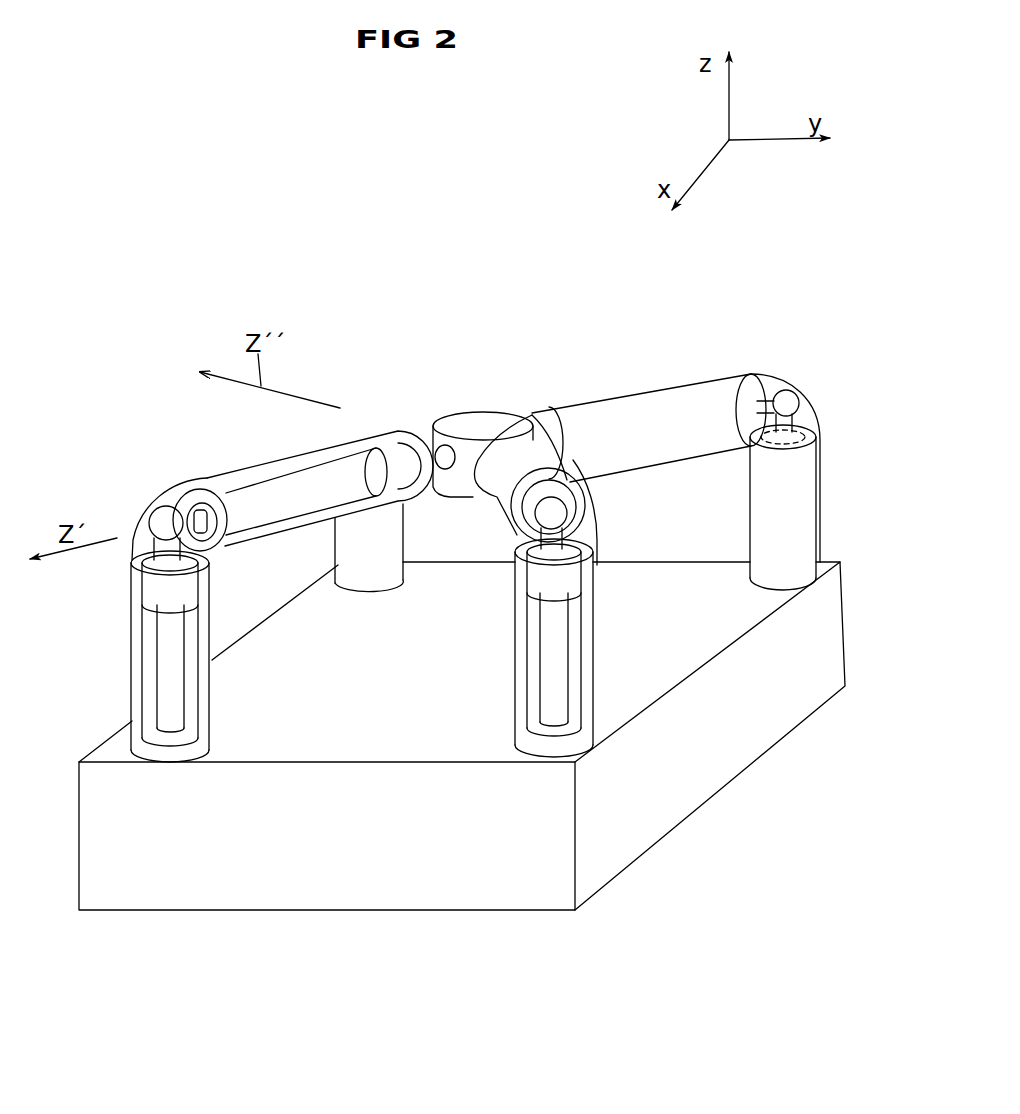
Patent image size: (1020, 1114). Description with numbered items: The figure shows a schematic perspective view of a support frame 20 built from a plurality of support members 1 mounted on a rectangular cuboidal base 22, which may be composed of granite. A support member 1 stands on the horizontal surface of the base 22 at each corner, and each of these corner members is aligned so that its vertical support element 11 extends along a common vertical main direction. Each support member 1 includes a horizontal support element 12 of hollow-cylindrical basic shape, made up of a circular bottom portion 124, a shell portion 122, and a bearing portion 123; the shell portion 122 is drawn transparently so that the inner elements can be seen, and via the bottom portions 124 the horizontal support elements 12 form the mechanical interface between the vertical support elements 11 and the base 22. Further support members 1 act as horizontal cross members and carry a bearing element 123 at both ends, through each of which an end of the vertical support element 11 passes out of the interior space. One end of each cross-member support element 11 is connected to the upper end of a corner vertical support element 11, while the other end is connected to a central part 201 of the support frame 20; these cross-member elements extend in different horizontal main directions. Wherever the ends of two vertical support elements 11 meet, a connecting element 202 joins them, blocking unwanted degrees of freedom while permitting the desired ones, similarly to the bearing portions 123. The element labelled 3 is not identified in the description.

The support frame 20 is at (162, 378).
The support member 1 is at (413, 397).
The shaft 3 is at (233, 498).
The vertical support element 11 is at (760, 404).
The horizontal support element 12 is at (233, 460).
The base 22 is at (740, 735).
The shell portion 122 is at (388, 416).
The bearing portion 123 is at (405, 456).
The bottom portion 124 is at (545, 727).
The central part 201 is at (473, 427).
The connecting element 202 is at (160, 527).